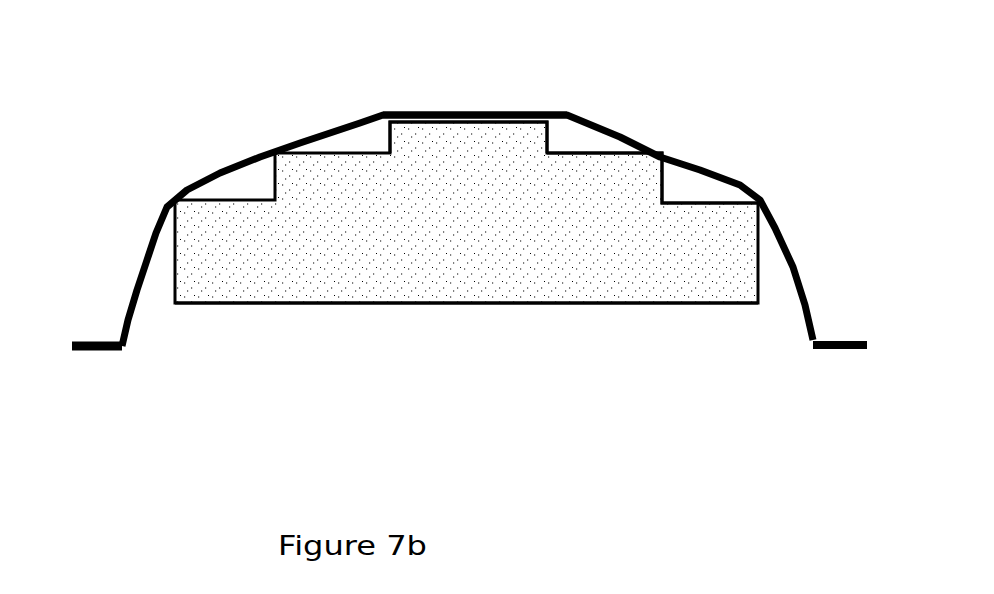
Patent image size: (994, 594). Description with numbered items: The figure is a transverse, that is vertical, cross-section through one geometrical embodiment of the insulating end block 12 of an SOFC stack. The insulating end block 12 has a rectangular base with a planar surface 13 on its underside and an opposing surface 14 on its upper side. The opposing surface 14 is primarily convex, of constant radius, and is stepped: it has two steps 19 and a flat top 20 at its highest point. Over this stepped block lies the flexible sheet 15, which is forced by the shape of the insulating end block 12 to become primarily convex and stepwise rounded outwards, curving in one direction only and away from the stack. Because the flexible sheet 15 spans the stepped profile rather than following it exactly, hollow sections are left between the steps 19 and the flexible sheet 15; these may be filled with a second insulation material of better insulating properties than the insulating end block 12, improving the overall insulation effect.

The insulating end block 12 is at (388, 237).
The planar surface 13 is at (527, 292).
The opposing surface 14 is at (473, 120).
The flexible sheet 15 is at (148, 245).
The steps 19 is at (695, 208).
The flat top 20 is at (440, 113).